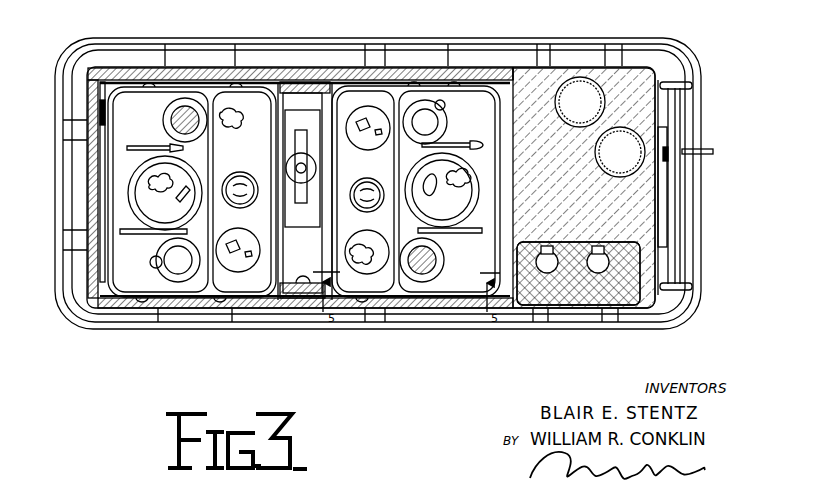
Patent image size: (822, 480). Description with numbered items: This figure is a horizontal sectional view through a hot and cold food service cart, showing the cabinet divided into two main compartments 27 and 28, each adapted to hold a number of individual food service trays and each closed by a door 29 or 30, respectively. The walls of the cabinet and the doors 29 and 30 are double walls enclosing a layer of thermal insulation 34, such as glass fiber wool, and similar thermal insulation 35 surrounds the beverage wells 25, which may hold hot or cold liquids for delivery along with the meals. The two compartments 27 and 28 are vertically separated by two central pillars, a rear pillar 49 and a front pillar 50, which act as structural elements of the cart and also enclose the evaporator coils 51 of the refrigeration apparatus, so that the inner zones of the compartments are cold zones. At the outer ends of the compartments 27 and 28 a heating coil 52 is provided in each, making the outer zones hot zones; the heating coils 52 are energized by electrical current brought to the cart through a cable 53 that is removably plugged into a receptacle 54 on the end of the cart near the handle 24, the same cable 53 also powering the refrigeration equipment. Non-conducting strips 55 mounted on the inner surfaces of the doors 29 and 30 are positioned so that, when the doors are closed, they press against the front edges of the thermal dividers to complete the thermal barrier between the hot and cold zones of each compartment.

The handle 24 is at (690, 85).
The beverage well 25 is at (571, 111).
The main compartment 27 is at (199, 315).
The main compartment 28 is at (437, 315).
The door 29 is at (128, 310).
The door 30 is at (462, 312).
The thermal insulation 34 is at (185, 67).
The thermal insulation 35 is at (553, 72).
The central pillar 49 is at (332, 82).
The central pillar 50 is at (293, 310).
The evaporator coil 51 is at (312, 228).
The heating coil 52 is at (100, 210).
The cable 53 is at (705, 150).
The receptacle 54 is at (668, 160).
The non-conducting strip 55 is at (150, 82).